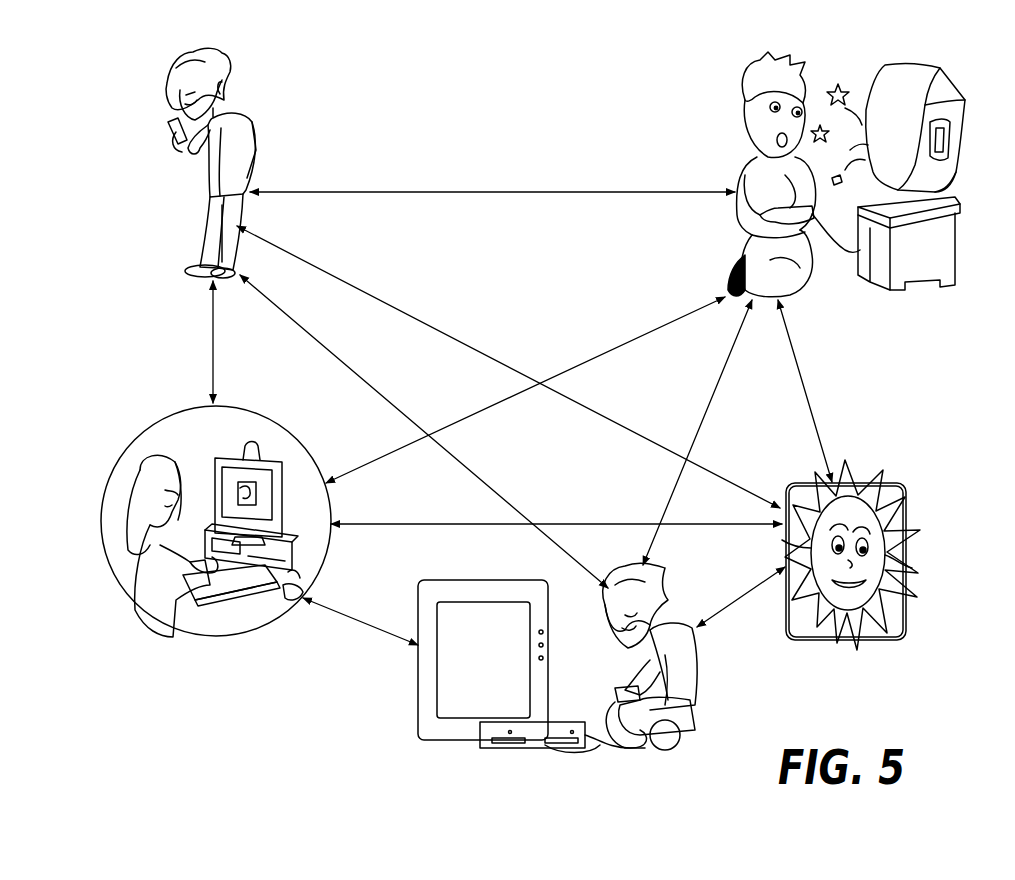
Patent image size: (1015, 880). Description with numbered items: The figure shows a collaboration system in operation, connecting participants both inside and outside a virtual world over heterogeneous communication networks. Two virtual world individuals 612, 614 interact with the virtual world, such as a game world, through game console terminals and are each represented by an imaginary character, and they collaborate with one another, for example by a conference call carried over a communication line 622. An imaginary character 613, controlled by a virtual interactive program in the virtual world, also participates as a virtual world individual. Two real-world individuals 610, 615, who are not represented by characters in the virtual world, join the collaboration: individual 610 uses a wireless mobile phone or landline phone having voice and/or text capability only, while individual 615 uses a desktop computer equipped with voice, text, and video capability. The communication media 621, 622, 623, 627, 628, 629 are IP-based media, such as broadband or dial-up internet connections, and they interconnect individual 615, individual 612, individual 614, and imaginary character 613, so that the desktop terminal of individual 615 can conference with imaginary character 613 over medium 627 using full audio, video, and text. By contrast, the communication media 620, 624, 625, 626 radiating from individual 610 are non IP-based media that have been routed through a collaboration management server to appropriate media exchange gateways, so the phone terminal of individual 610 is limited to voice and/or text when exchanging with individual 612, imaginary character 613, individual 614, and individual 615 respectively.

The individual 610 is at (210, 160).
The individual 612 is at (746, 113).
The imaginary character 613 is at (908, 520).
The individual 614 is at (700, 690).
The individual 615 is at (152, 423).
The communication medium 620 is at (478, 191).
The communication medium 621 is at (505, 402).
The communication line 622 is at (698, 430).
The communication medium 623 is at (797, 370).
The communication medium 624 is at (475, 352).
The communication medium 625 is at (357, 378).
The communication medium 626 is at (213, 340).
The communication medium 627 is at (603, 523).
The communication medium 628 is at (735, 600).
The communication medium 629 is at (355, 615).